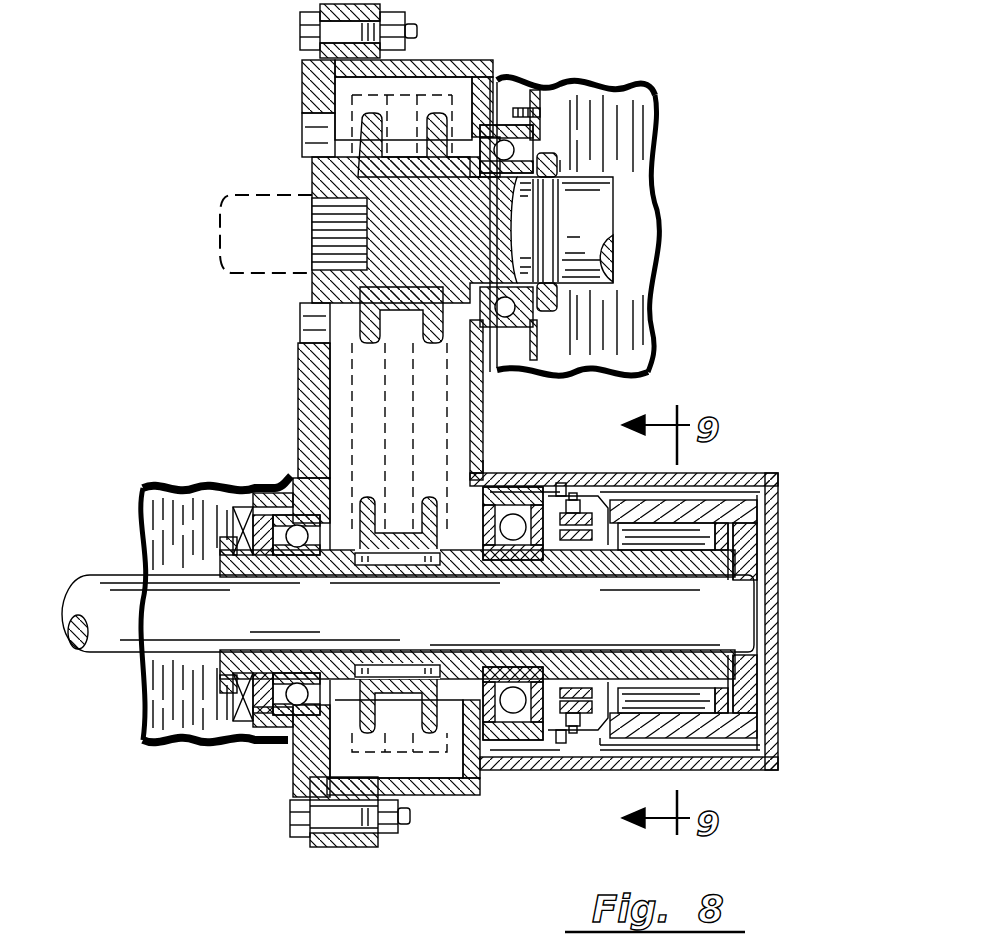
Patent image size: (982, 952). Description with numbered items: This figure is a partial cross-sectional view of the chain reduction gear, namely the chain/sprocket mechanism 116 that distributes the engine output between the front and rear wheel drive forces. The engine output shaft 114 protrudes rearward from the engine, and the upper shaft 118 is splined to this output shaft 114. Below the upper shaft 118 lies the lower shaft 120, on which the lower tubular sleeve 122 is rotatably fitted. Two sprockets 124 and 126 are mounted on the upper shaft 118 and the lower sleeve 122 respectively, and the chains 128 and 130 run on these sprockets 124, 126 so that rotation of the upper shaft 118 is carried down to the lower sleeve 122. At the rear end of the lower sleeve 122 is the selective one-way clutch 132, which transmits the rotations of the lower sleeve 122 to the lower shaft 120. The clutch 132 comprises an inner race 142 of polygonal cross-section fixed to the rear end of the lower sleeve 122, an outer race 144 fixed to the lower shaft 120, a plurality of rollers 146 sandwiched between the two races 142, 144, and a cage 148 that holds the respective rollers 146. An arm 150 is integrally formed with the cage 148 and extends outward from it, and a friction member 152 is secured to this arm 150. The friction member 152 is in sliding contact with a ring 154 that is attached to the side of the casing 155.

The output shaft 114 is at (305, 190).
The chain/sprocket mechanism 116 is at (632, 45).
The upper shaft 118 is at (597, 178).
The lower shaft 120 is at (115, 655).
The lower tubular sleeve 122 is at (215, 562).
The sprocket 124 is at (442, 178).
The sprocket 126 is at (428, 720).
The chain 128 is at (347, 407).
The chain 130 is at (450, 432).
The selective one-way clutch 132 is at (590, 790).
The inner race 142 is at (717, 562).
The outer race 144 is at (723, 742).
The rollers 146 is at (700, 543).
The cage 148 is at (720, 537).
The arm 150 is at (598, 520).
The friction member 152 is at (566, 528).
The ring 154 is at (587, 543).
The casing 155 is at (483, 462).